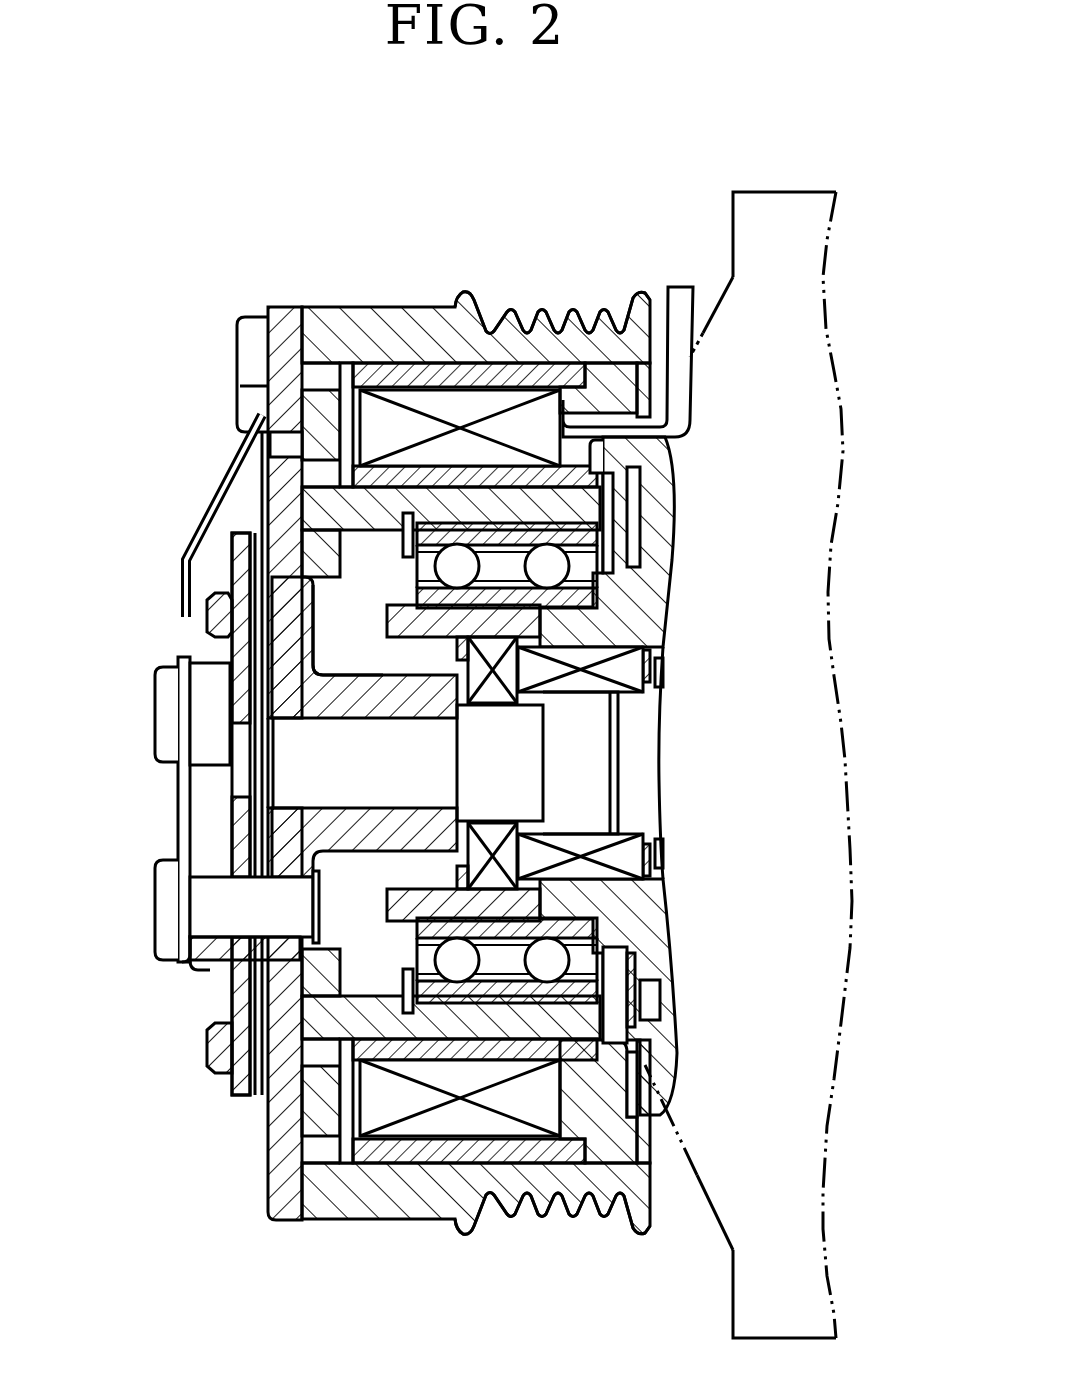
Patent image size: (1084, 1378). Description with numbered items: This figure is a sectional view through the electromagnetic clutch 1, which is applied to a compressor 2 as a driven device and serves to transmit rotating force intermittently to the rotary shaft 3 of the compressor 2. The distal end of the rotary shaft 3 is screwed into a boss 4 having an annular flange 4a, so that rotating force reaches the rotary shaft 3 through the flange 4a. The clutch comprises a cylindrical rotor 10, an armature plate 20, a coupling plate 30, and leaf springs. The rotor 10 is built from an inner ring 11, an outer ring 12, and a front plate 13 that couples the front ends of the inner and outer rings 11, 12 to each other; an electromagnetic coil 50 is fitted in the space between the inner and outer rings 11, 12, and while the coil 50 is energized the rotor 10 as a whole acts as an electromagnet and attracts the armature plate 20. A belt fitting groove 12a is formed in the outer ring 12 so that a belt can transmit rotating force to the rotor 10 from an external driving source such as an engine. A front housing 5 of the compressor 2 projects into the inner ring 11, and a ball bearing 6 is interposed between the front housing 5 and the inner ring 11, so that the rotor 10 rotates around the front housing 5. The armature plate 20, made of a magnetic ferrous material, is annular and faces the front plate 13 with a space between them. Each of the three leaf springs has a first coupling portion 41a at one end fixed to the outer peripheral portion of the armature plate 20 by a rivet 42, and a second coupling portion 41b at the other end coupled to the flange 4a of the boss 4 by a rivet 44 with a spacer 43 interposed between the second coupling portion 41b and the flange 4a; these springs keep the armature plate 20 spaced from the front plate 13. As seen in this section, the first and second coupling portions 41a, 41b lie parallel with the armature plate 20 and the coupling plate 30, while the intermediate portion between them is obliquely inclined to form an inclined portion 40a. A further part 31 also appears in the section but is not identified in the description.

The electromagnetic clutch 1 is at (165, 410).
The compressor 2 is at (822, 275).
The rotary shaft 3 is at (598, 753).
The boss 4 is at (345, 672).
The annular flange 4a is at (313, 582).
The front housing 5 is at (630, 605).
The ball bearing 6 is at (578, 925).
The rotor 10 is at (441, 276).
The inner ring 11 is at (583, 505).
The outer ring 12 is at (358, 320).
The belt fitting groove 12a is at (565, 325).
The front plate 13 is at (313, 1120).
The armature plate 20 is at (286, 308).
The coupling plate 30 is at (240, 1015).
The rivet 31 is at (212, 625).
The inclined portion 40a is at (235, 470).
The first coupling portion 41a is at (258, 386).
The second coupling portion 41b is at (183, 585).
The rivet 42 is at (240, 340).
The spacer 43 is at (200, 968).
The rivet 44 is at (165, 740).
The electromagnetic coil 50 is at (422, 1120).